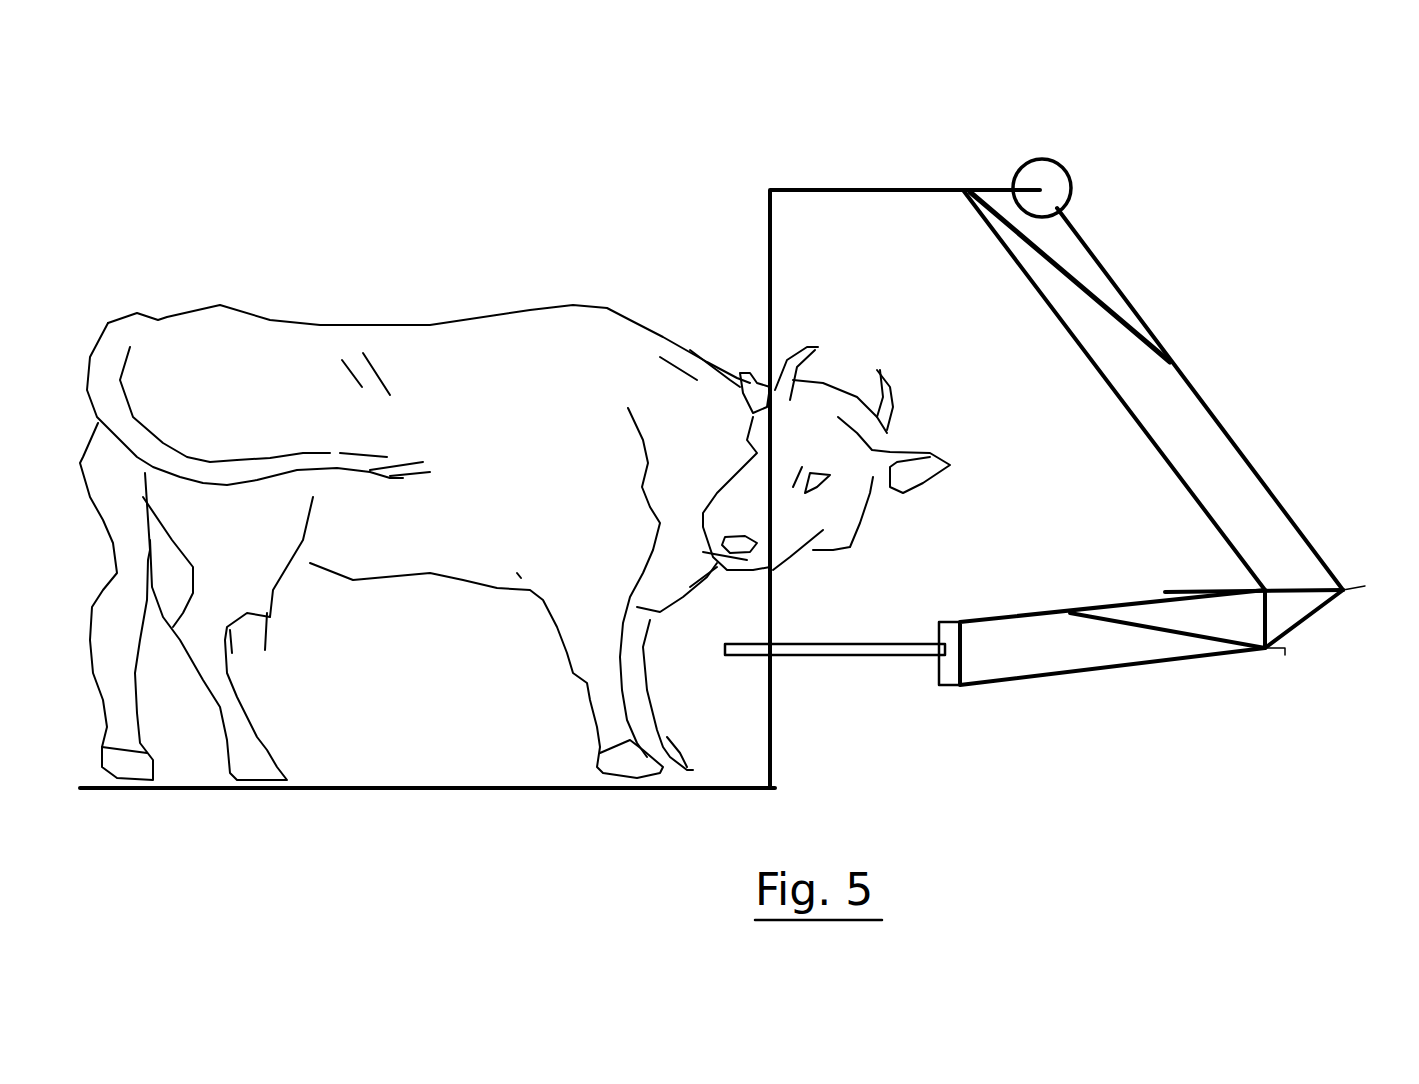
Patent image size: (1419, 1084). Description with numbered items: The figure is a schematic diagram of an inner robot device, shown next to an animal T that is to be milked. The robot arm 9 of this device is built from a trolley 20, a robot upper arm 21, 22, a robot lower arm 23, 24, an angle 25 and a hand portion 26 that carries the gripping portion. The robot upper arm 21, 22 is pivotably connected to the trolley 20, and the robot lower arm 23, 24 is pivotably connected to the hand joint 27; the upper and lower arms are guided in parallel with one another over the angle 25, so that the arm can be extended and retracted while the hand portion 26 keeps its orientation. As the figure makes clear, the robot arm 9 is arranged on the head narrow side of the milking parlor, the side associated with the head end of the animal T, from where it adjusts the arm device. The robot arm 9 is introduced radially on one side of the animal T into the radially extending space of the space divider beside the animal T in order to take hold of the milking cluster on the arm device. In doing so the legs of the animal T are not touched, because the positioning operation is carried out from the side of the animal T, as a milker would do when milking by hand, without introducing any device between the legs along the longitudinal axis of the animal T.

The animal T is at (572, 307).
The robot arm 9 is at (1268, 392).
The trolley 20 is at (1060, 170).
The robot upper arm 21 is at (1164, 391).
The robot upper arm 22 is at (1177, 362).
The robot lower arm 23 is at (1125, 683).
The robot lower arm 24 is at (1175, 662).
The angle 25 is at (1298, 610).
The hand portion 26 is at (853, 658).
The hand joint 27 is at (948, 675).